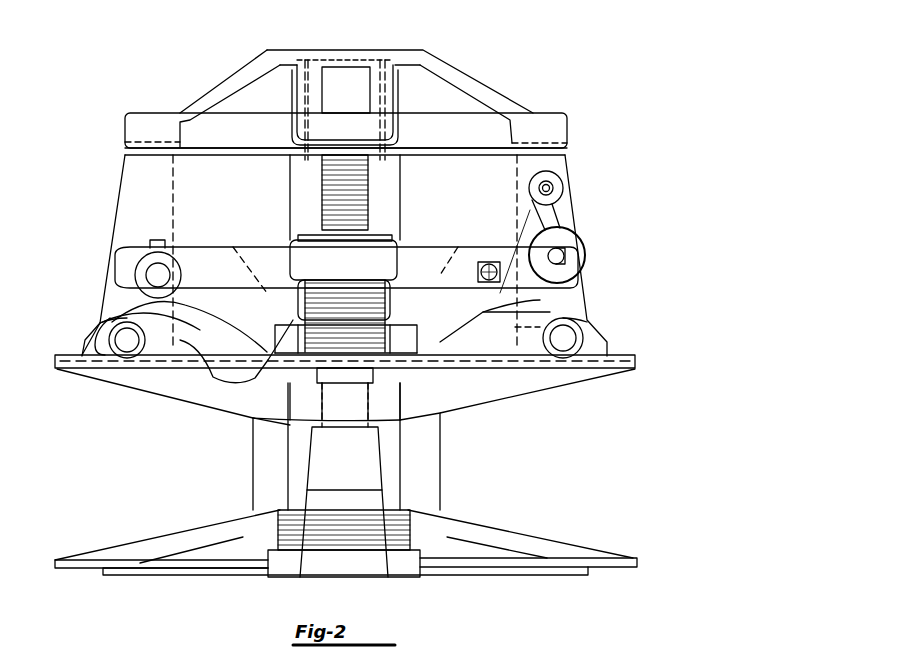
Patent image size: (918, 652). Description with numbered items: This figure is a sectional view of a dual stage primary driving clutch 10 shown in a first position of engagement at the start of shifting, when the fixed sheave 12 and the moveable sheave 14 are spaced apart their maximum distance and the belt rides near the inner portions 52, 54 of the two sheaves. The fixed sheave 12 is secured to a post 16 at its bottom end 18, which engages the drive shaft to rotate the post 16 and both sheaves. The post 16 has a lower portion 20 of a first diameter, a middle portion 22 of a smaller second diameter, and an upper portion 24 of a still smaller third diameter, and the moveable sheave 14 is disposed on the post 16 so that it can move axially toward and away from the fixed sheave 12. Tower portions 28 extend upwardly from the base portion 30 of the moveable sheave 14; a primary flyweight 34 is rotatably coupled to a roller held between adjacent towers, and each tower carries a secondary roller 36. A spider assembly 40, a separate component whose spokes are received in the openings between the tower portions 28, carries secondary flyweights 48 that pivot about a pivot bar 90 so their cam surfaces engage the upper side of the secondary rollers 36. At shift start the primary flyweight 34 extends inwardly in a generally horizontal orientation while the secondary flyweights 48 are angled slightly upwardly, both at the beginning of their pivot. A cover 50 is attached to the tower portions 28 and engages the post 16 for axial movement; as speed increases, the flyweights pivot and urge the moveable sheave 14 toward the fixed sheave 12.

The driving clutch 10 is at (502, 48).
The fixed sheave 12 is at (590, 547).
The moveable sheave 14 is at (638, 361).
The post 16 is at (382, 477).
The bottom end 18 is at (413, 565).
The lower portion 20 is at (390, 498).
The middle portion 22 is at (400, 310).
The upper portion 24 is at (385, 190).
The tower portions 28 is at (133, 207).
The base portion 30 is at (620, 355).
The primary flyweight 34 is at (225, 348).
The secondary roller 36 is at (575, 258).
The spider assembly 40 is at (535, 295).
The secondary flyweights 48 is at (545, 222).
The cover 50 is at (495, 90).
The inner portion 52 is at (275, 508).
The inner portion 54 is at (253, 420).
The pivot bar 90 is at (492, 265).